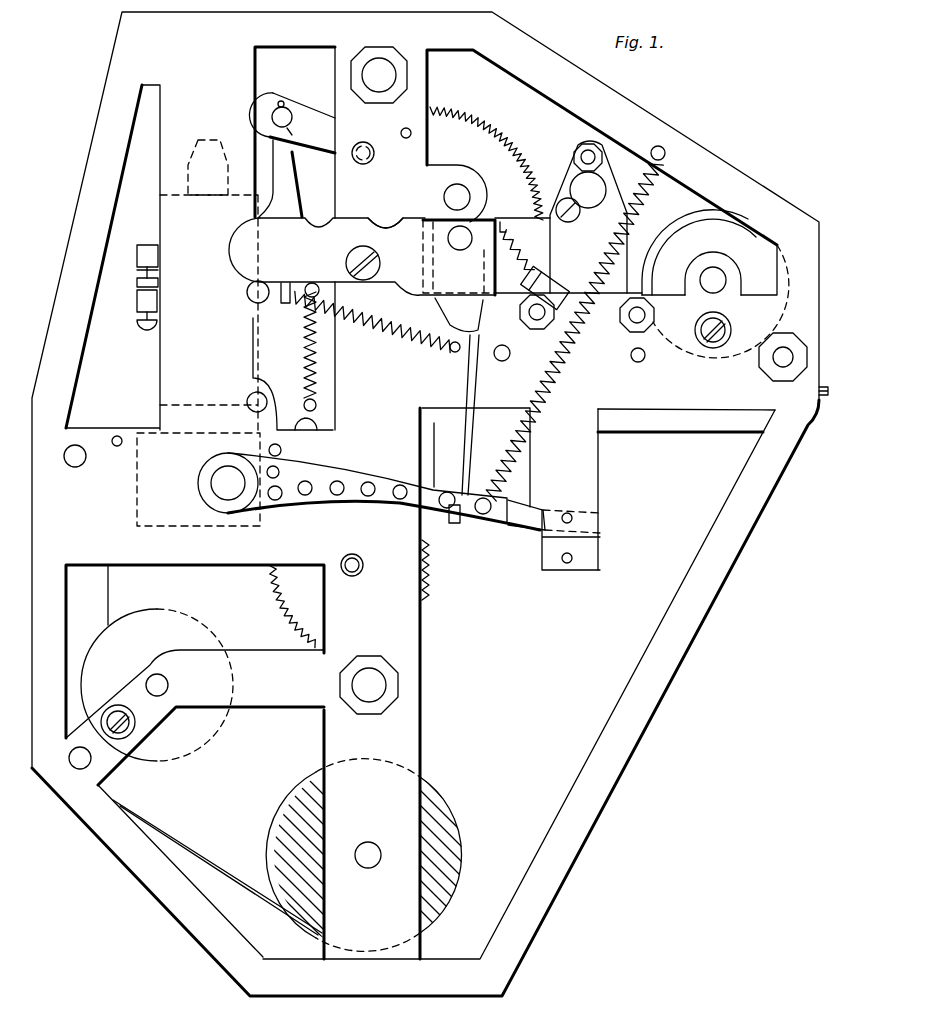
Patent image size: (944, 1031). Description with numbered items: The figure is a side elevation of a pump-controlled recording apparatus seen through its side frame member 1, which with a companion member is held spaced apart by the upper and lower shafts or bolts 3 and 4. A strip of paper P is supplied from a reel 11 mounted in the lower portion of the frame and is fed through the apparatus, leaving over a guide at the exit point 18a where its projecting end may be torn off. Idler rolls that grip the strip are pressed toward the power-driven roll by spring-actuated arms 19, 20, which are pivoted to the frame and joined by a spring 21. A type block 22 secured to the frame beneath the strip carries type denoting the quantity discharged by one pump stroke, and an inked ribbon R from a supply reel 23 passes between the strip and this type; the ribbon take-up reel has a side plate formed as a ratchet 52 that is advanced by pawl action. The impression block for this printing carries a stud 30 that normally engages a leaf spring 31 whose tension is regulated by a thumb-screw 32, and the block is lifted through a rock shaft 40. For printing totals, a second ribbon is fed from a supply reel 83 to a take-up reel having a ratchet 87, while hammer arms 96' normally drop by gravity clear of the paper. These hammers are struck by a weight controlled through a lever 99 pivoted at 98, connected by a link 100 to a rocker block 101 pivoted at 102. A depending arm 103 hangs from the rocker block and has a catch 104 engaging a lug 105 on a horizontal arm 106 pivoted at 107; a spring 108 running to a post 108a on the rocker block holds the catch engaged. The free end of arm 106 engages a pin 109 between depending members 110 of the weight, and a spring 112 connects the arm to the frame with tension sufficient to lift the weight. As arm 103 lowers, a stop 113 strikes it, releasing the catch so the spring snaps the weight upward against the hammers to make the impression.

The side frame member 1 is at (608, 92).
The upper shaft or bolt 3 is at (381, 64).
The lower shaft or bolt 4 is at (367, 680).
The supply reel 11 is at (435, 810).
The exit point 18a is at (827, 400).
The spring-actuated arm 19 is at (362, 256).
The spring-actuated arm 20 is at (285, 385).
The spring 21 is at (305, 352).
The type block 22 is at (133, 502).
The ribbon supply reel 23 is at (175, 625).
The stud or pin 30 is at (143, 245).
The leaf spring 31 is at (137, 282).
The thumb-screw 32 is at (137, 327).
The rock shaft 40 is at (368, 143).
The ratchet 52 is at (293, 603).
The supply reel 83 is at (687, 233).
The ratchet 87 is at (517, 157).
The hammer arm 96' is at (686, 489).
The pivot 98 is at (410, 125).
The lever 99 is at (293, 107).
The link 100 is at (288, 208).
The rocker block 101 is at (340, 230).
The pivot 102 is at (378, 263).
The depending arm 103 is at (513, 230).
The hook or catch 104 is at (447, 527).
The lug 105 is at (465, 493).
The horizontal arm 106 is at (370, 478).
The pivot 107 is at (228, 482).
The spring 108 is at (397, 337).
The post 108a is at (332, 273).
The pin or stud 109 is at (567, 513).
The depending members 110 is at (600, 515).
The spring 112 is at (553, 375).
The stop 113 is at (548, 287).
The strip of paper P is at (190, 850).
The inked ribbon R is at (110, 603).